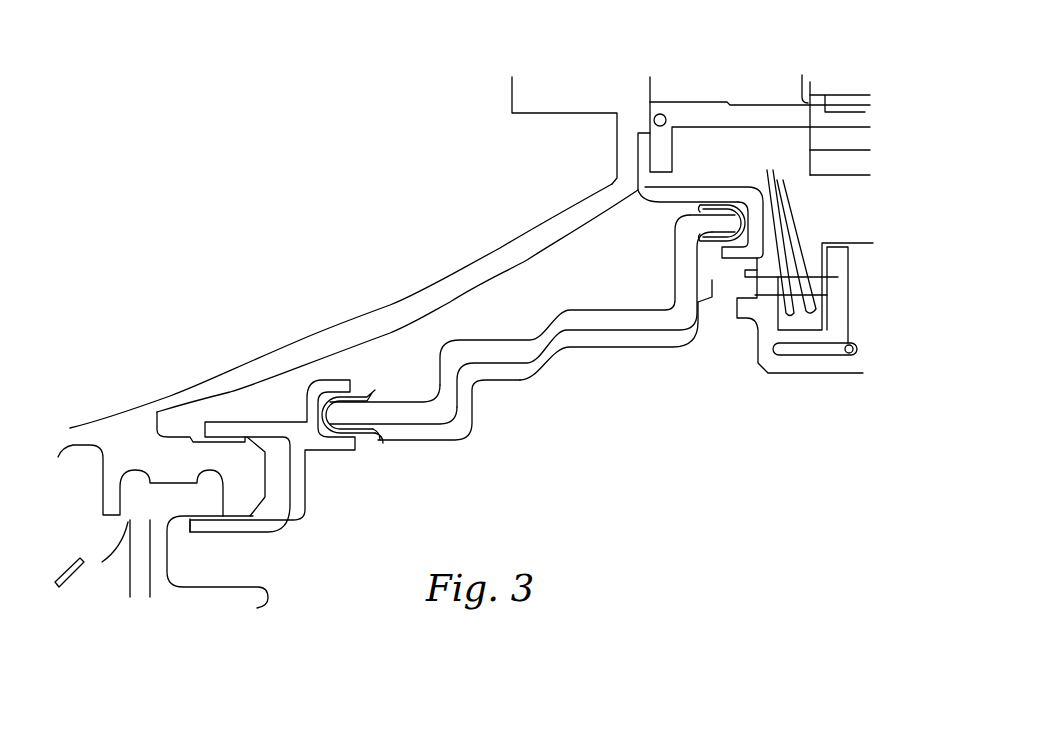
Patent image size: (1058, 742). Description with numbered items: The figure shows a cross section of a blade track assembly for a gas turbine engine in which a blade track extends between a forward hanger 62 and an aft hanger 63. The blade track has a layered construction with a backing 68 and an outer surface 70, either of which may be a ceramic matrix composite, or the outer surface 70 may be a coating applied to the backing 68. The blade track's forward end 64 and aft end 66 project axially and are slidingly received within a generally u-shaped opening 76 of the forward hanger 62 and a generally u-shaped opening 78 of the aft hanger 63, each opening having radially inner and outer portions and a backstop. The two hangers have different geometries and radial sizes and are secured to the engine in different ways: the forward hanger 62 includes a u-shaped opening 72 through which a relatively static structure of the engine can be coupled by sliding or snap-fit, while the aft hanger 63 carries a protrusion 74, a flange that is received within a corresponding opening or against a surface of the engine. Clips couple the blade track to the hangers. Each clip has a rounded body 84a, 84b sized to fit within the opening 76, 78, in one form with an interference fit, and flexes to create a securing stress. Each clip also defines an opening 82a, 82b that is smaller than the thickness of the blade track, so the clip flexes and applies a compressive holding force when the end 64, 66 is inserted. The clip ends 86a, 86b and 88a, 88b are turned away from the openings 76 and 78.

The forward hanger 62 is at (273, 547).
The aft hanger 63 is at (760, 172).
The forward end 64 is at (380, 433).
The aft end 66 is at (758, 368).
The backing 68 is at (585, 310).
The outer surface 70 is at (595, 348).
The opening 72 is at (167, 418).
The protrusion 74 is at (647, 153).
The opening 76 is at (390, 337).
The opening 78 is at (647, 217).
The opening 82a is at (387, 397).
The opening 82b is at (693, 212).
The rounded body 84a is at (308, 450).
The rounded body 84b is at (753, 222).
The end 86a is at (362, 397).
The end 86b is at (713, 202).
The end 88a is at (365, 437).
The end 88b is at (712, 322).